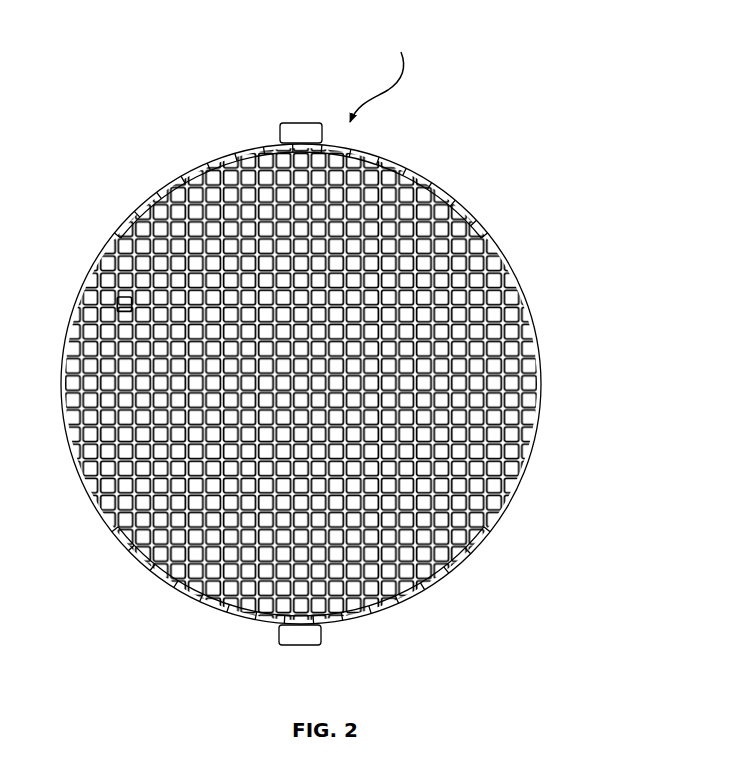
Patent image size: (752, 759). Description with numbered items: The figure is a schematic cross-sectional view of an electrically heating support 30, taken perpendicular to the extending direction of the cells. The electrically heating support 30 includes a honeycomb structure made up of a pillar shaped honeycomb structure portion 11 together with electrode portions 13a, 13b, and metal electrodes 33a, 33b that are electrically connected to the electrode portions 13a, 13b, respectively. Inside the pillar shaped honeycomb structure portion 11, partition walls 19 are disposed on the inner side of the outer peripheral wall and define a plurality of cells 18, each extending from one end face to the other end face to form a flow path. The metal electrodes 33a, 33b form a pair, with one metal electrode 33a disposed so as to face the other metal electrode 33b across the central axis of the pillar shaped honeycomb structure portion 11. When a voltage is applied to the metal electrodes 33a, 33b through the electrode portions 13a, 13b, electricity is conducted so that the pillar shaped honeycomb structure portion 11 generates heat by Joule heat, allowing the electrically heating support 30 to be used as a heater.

The pillar shaped honeycomb structure portion 11 is at (541, 342).
The electrode portion 13a is at (434, 184).
The electrode portion 13b is at (445, 578).
The cells 18 is at (90, 337).
The partition walls 19 is at (126, 306).
The electrically heating support 30 is at (388, 74).
The metal electrode 33a is at (280, 134).
The metal electrode 33b is at (279, 636).